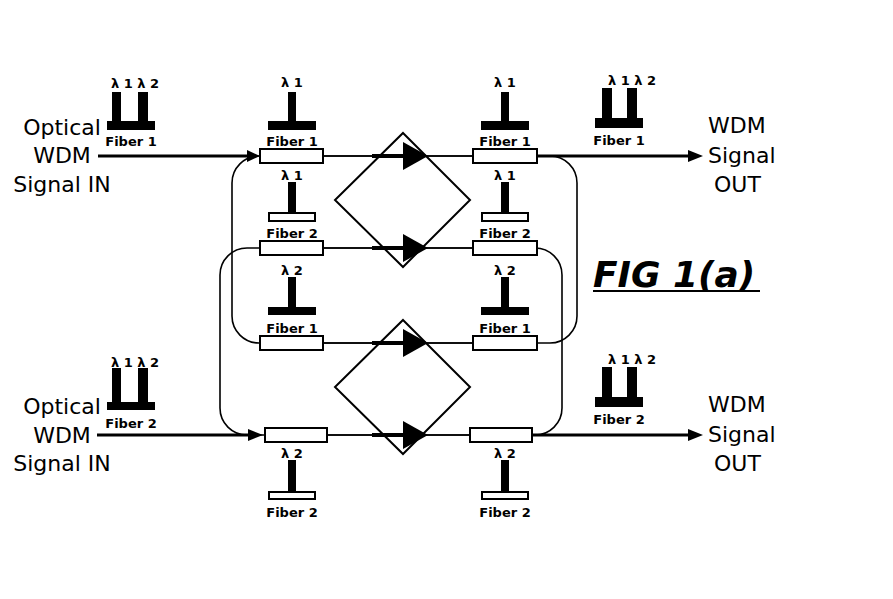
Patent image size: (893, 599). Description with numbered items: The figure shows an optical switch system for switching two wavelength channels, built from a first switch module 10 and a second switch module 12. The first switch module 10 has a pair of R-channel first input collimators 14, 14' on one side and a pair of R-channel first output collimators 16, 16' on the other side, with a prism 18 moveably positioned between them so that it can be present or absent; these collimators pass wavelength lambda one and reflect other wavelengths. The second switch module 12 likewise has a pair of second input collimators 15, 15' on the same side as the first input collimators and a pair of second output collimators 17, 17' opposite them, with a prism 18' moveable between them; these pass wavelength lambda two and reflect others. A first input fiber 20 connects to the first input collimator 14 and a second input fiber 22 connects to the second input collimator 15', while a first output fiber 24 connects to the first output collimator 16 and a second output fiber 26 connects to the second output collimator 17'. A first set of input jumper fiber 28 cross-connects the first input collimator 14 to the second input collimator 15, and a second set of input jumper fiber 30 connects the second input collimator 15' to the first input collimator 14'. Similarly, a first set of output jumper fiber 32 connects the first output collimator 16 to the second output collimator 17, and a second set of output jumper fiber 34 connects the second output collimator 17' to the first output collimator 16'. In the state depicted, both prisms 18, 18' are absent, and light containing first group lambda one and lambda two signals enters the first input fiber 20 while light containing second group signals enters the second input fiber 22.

The first switch module 10 is at (411, 128).
The second switch module 12 is at (389, 460).
The first input collimator 14 is at (268, 93).
The first input collimator 14' is at (230, 234).
The second input collimator 15 is at (229, 315).
The second input collimator 15' is at (274, 497).
The first output collimator 16 is at (533, 92).
The first output collimator 16' is at (567, 234).
The second output collimator 17 is at (560, 324).
The second output collimator 17' is at (483, 497).
The prism 18 is at (366, 90).
The prism 18' is at (365, 501).
The first input fiber 20 is at (205, 154).
The second input fiber 22 is at (202, 437).
The first output fiber 24 is at (680, 152).
The second output fiber 26 is at (605, 438).
The first set of input jumper fiber 28 is at (232, 202).
The second set of input jumper fiber 30 is at (218, 345).
The first set of output jumper fiber 32 is at (580, 200).
The second set of output jumper fiber 34 is at (563, 350).